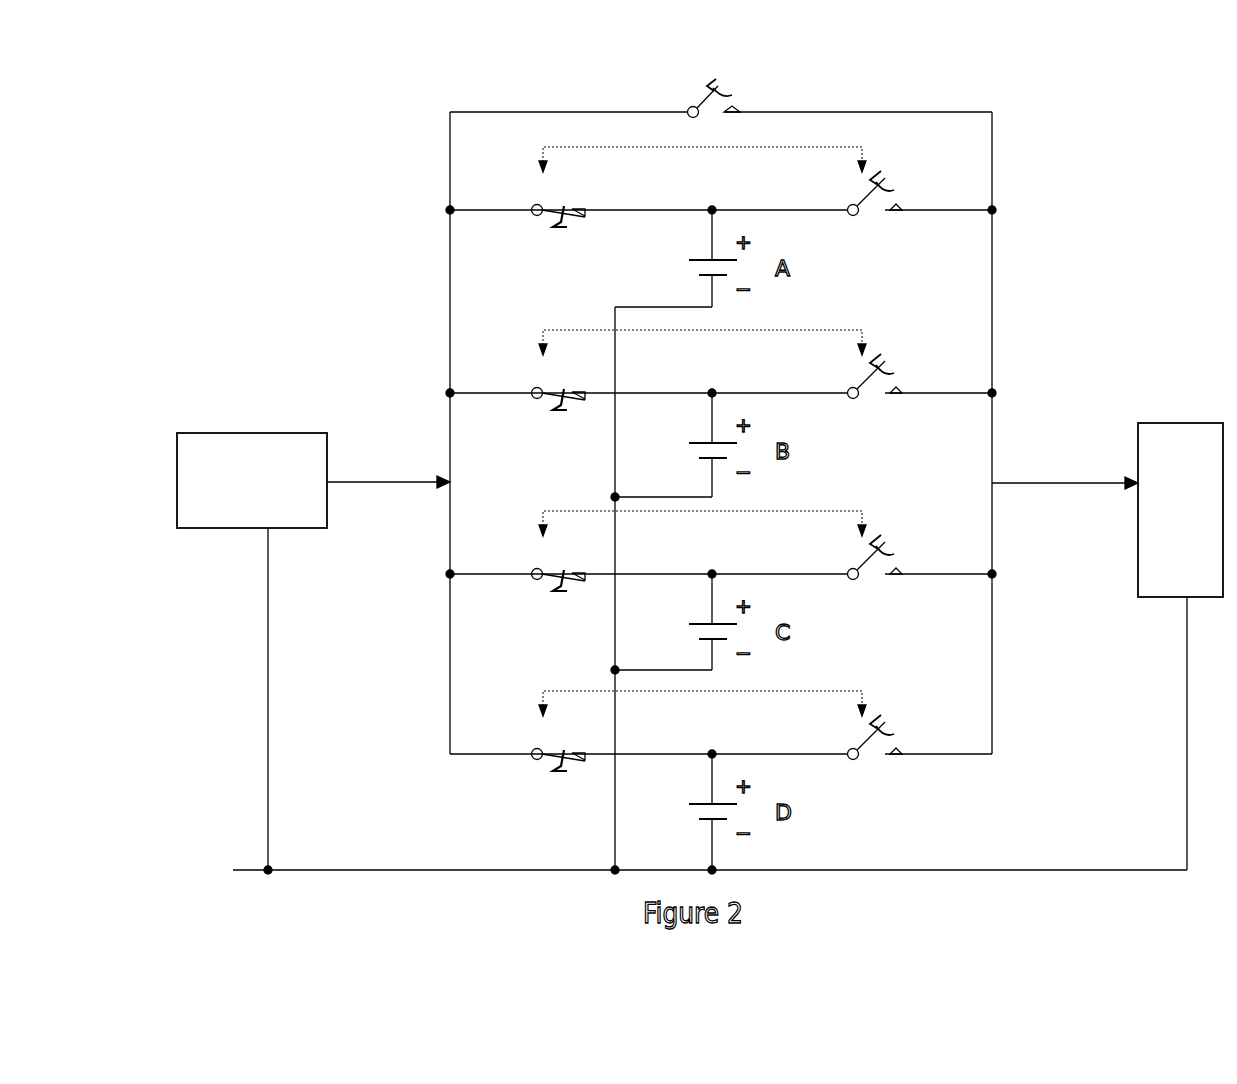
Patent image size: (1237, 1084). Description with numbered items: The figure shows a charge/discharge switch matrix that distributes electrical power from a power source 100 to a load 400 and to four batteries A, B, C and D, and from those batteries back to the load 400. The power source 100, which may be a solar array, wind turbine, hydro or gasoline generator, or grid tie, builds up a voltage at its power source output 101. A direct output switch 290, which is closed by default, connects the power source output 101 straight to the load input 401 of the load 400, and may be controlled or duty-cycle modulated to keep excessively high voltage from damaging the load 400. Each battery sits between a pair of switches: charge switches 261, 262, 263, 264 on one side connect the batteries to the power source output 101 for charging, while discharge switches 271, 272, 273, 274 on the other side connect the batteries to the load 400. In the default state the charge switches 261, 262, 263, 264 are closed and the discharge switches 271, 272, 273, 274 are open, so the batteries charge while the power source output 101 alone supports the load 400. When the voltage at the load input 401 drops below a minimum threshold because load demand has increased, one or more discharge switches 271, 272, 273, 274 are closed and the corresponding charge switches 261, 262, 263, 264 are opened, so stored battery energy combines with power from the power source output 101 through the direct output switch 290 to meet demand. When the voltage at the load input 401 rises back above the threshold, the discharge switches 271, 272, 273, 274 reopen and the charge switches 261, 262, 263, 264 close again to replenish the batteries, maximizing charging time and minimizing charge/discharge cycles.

The power source 100 is at (252, 433).
The power source output 101 is at (418, 481).
The direct output switch 290 is at (840, 82).
The charge switch 261 is at (559, 236).
The charge switch 262 is at (559, 419).
The charge switch 263 is at (559, 600).
The charge switch 264 is at (557, 779).
The discharge switch 271 is at (920, 215).
The discharge switch 272 is at (920, 398).
The discharge switch 273 is at (920, 579).
The discharge switch 274 is at (920, 756).
The load 400 is at (1198, 423).
The load input 401 is at (1109, 481).